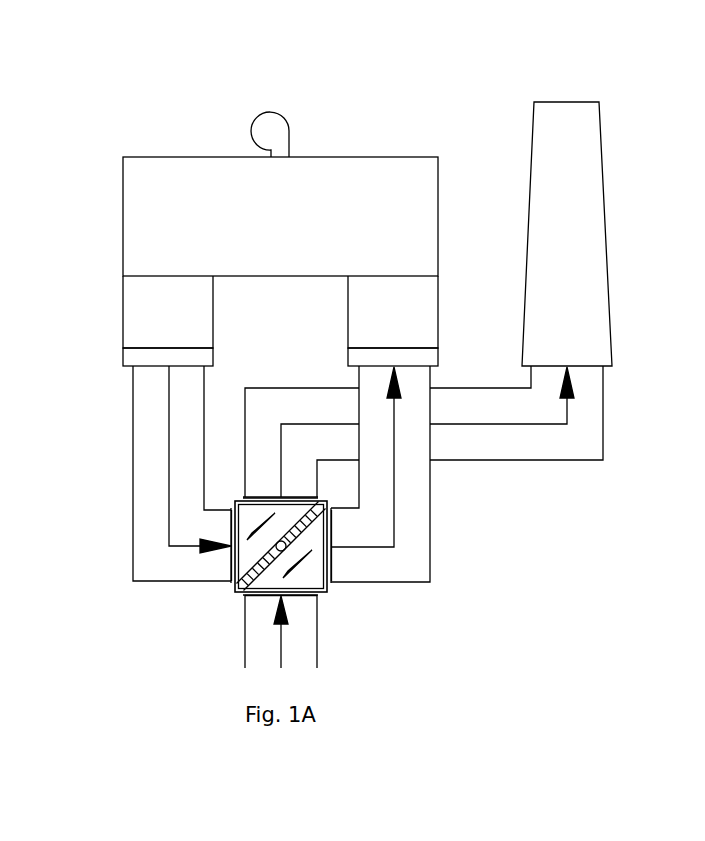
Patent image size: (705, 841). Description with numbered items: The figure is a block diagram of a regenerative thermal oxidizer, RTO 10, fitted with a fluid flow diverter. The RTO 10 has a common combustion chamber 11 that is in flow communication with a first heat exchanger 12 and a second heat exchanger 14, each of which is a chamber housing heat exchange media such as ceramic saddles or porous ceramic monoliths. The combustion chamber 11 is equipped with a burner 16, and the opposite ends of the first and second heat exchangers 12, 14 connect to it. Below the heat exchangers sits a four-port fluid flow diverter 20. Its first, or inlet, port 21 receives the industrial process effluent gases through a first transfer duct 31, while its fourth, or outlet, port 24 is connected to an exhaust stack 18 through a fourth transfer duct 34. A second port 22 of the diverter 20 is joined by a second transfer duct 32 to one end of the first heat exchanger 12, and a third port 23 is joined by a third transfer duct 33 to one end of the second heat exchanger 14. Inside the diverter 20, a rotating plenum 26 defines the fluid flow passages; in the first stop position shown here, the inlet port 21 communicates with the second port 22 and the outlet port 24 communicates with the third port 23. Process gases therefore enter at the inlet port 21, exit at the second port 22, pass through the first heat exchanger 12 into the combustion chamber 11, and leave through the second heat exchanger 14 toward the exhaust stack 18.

The regenerative thermal oxidizer 10 is at (160, 29).
The common combustion chamber 11 is at (280, 167).
The first heat exchanger 12 is at (426, 316).
The second heat exchanger 14 is at (115, 314).
The burner 16 is at (231, 109).
The exhaust stack 18 is at (612, 211).
The four-port fluid flow diverter 20 is at (357, 613).
The first (inlet) port 21 is at (181, 651).
The second port 22 is at (408, 606).
The third port 23 is at (145, 587).
The fourth (outlet) port 24 is at (168, 420).
The rotating plenum 26 is at (360, 574).
The first transfer duct 31 is at (202, 668).
The second transfer duct 32 is at (431, 505).
The third transfer duct 33 is at (124, 473).
The fourth transfer duct 34 is at (518, 461).